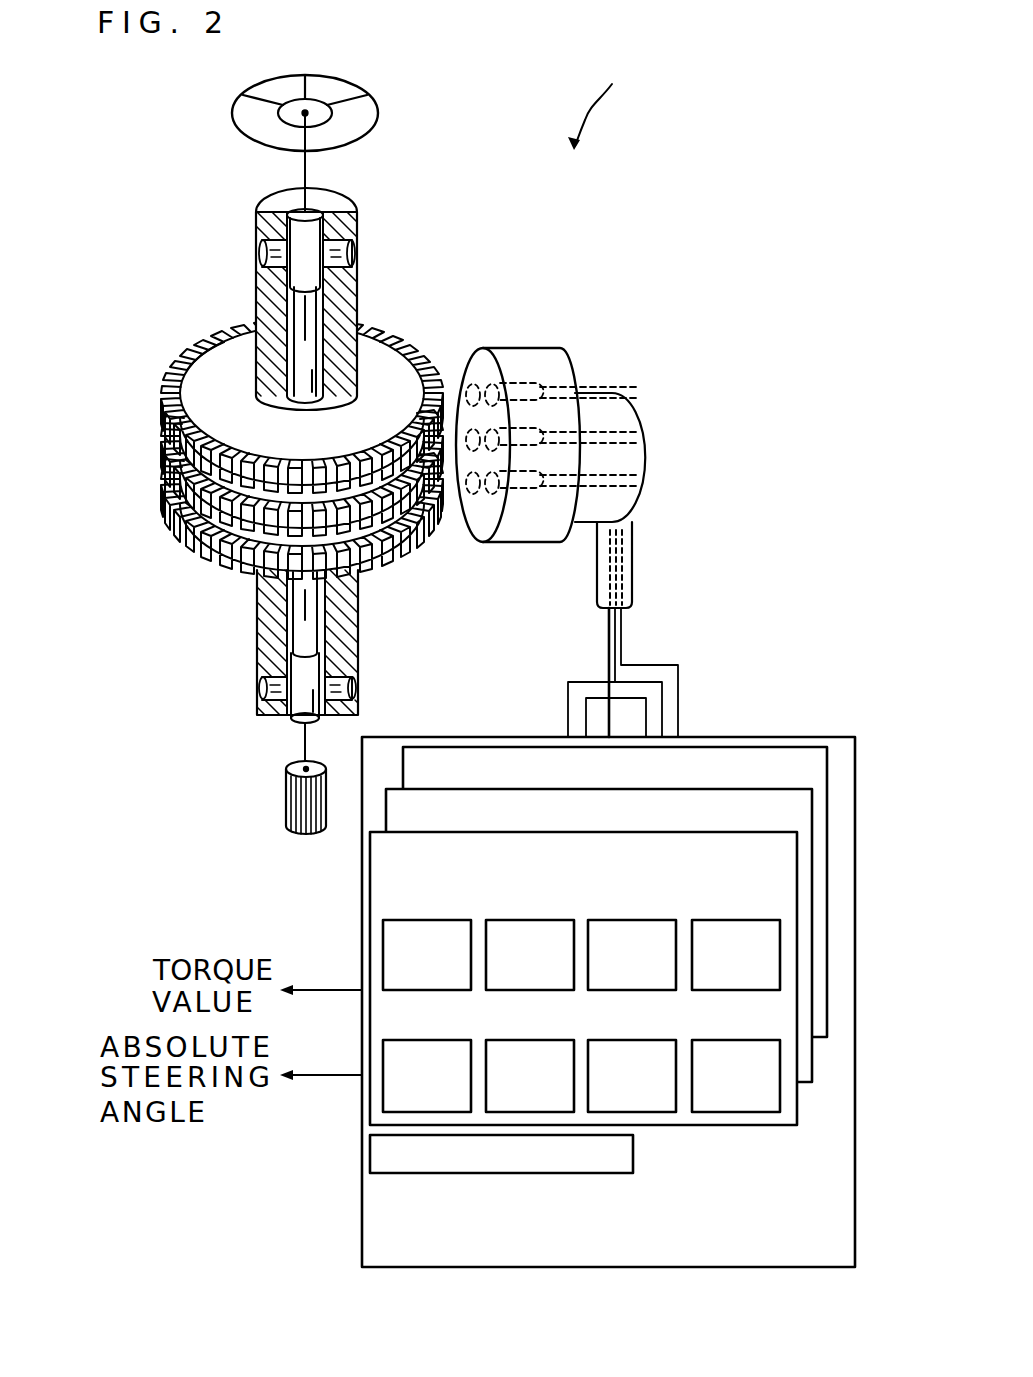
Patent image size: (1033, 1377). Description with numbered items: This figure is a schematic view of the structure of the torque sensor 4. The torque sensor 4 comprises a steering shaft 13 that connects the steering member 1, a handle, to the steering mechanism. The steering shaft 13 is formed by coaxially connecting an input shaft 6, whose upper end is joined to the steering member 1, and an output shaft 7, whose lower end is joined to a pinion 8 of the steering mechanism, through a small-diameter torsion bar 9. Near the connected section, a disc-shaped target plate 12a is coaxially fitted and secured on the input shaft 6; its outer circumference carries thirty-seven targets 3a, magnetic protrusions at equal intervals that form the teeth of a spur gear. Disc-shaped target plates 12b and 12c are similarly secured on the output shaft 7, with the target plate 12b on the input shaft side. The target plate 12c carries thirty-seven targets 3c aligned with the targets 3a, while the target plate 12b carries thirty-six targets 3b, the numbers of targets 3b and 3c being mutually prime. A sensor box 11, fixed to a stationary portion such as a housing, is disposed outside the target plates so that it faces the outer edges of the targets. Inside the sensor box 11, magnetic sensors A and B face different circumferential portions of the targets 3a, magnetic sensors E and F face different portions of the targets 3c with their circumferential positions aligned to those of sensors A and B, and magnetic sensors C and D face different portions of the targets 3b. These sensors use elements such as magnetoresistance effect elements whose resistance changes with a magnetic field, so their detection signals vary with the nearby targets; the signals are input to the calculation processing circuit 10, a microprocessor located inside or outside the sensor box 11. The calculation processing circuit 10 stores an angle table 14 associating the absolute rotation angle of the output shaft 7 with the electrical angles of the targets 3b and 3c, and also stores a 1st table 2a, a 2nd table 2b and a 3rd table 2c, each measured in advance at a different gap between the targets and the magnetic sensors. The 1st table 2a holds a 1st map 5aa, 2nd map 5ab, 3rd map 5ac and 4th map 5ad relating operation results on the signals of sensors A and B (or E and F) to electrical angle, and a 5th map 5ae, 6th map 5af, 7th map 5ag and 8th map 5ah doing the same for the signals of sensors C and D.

The steering member 1 is at (378, 107).
The torque sensor 4 is at (596, 100).
The input shaft 6 is at (356, 276).
The output shaft 7 is at (258, 650).
The pinion 8 is at (287, 795).
The torsion bar 9 is at (300, 318).
The steering shaft 13 is at (368, 230).
The targets 3a is at (164, 382).
The targets 3b is at (165, 475).
The targets 3c is at (183, 540).
The target plate 12a is at (205, 365).
The target plate 12b is at (168, 418).
The target plate 12c is at (163, 500).
The sensor box 11 is at (560, 366).
The magnetic sensor A is at (468, 370).
The magnetic sensor B is at (515, 352).
The magnetic sensor C is at (632, 420).
The magnetic sensor D is at (640, 443).
The magnetic sensor E is at (645, 472).
The magnetic sensor F is at (640, 496).
The 1st table 2a is at (428, 830).
The 2nd table 2b is at (472, 788).
The 3rd table 2c is at (517, 747).
The 1st map 5aa is at (453, 919).
The 2nd map 5ab is at (556, 919).
The 3rd map 5ac is at (659, 919).
The 4th map 5ad is at (763, 919).
The 5th map 5ae is at (453, 1040).
The 6th map 5af is at (556, 1040).
The 7th map 5ag is at (659, 1040).
The 8th map 5ah is at (763, 1040).
The angle table 14 is at (636, 1158).
The calculation processing circuit 10 is at (686, 1268).